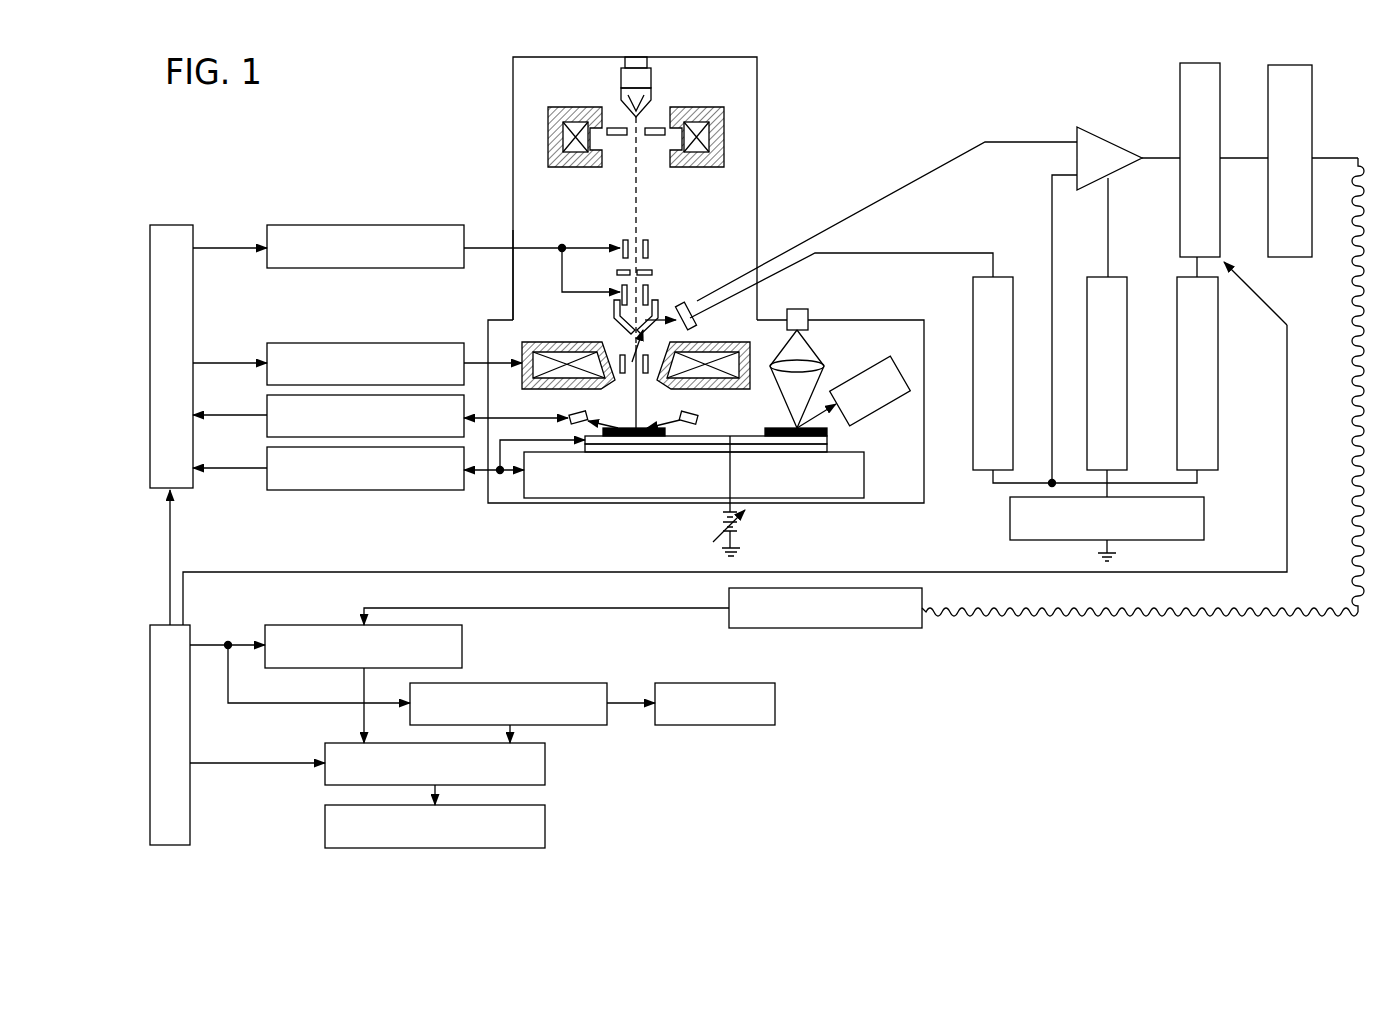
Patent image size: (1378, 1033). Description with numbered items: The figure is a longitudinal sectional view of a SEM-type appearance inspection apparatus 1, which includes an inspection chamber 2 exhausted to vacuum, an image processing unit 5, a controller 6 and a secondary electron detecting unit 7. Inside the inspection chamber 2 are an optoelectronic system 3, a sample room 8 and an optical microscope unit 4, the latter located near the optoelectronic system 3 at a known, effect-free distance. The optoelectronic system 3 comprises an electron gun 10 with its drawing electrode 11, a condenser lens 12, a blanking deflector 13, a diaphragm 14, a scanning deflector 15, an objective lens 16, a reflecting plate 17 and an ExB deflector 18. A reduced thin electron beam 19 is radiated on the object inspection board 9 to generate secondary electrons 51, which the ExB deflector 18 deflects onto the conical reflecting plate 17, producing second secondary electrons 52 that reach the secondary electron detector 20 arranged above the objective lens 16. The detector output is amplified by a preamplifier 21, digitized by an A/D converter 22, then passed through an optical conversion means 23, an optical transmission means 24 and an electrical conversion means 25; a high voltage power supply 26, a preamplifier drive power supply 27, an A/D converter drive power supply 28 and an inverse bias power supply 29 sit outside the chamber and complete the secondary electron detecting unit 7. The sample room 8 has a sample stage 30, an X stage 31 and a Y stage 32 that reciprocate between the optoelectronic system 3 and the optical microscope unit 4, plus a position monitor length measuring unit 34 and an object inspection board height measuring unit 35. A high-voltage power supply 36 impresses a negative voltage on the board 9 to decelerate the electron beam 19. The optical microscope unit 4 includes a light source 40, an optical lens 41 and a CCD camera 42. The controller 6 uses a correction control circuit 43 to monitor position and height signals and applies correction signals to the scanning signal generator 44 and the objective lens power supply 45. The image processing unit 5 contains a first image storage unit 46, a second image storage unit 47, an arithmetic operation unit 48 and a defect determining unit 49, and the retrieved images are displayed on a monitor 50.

The SEM-type appearance inspection apparatus 1 is at (365, 135).
The inspection chamber 2 is at (530, 107).
The optoelectronic system 3 is at (530, 218).
The optical microscope unit 4 is at (873, 330).
The image processing unit 5 is at (653, 763).
The controller 6 is at (190, 808).
The secondary electron detecting unit 7 is at (1048, 117).
The sample room 8 is at (501, 486).
The object inspection board 9 is at (627, 445).
The electron gun 10 is at (651, 78).
The drawing electrode 11 is at (655, 135).
The condenser lens 12 is at (697, 167).
The blanking deflector 13 is at (648, 245).
The diaphragm 14 is at (649, 265).
The scanning deflector 15 is at (654, 276).
The objective lens 16 is at (560, 342).
The reflecting plate 17 is at (615, 305).
The ExB deflector 18 is at (623, 377).
The electron beam 19 is at (632, 208).
The secondary electron detector 20 is at (700, 326).
The preamplifier 21 is at (1102, 133).
The A/D converter 22 is at (1178, 203).
The optical conversion means 23 is at (1312, 97).
The optical transmission means 24 is at (1083, 616).
The electrical conversion means 25 is at (878, 630).
The high voltage power supply 26 is at (1205, 518).
The preamplifier drive power supply 27 is at (1115, 277).
The A/D converter drive power supply 28 is at (1218, 373).
The inverse bias power supply 29 is at (1005, 277).
The sample stage 30 is at (864, 470).
The X stage 31 is at (808, 452).
The Y stage 32 is at (762, 452).
The position monitor length measuring unit 34 is at (267, 454).
The object inspection board height measuring unit 35 is at (267, 400).
The high-voltage power supply 36 is at (745, 532).
The light source 40 is at (800, 308).
The optical lens 41 is at (822, 366).
The CCD camera 42 is at (888, 412).
The correction control circuit 43 is at (176, 223).
The scanning signal generator 44 is at (267, 230).
The objective lens power supply 45 is at (267, 348).
The first image storage unit 46 is at (462, 646).
The second image storage unit 47 is at (560, 683).
The arithmetic operation unit 48 is at (545, 765).
The defect determining unit 49 is at (545, 826).
The monitor 50 is at (775, 703).
The secondary electrons 51 is at (632, 333).
The second secondary electrons 52 is at (650, 303).